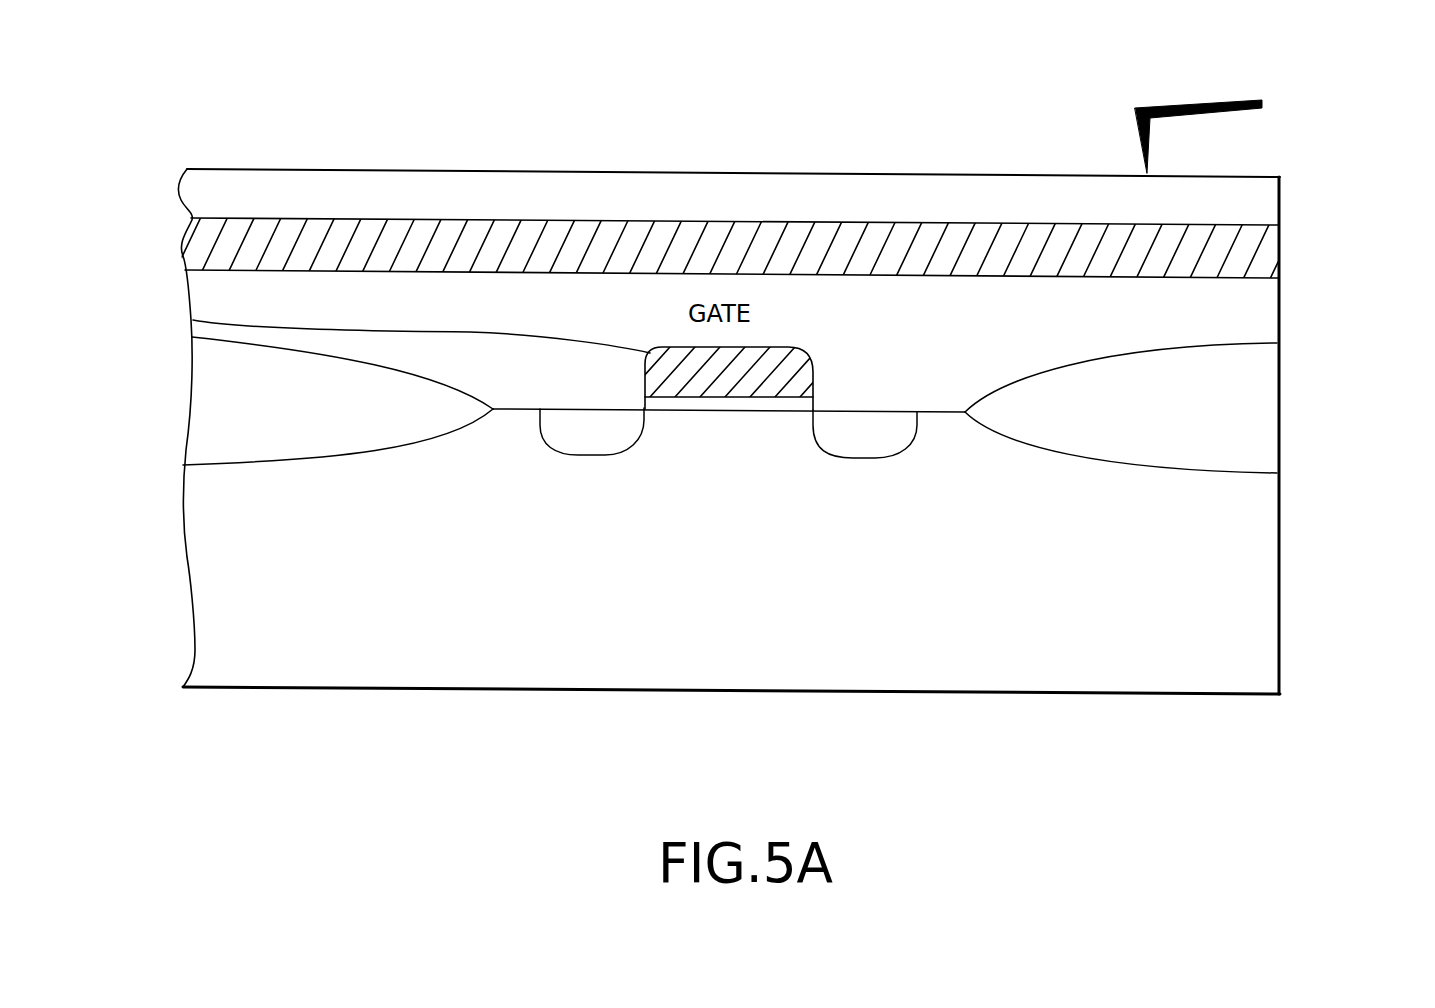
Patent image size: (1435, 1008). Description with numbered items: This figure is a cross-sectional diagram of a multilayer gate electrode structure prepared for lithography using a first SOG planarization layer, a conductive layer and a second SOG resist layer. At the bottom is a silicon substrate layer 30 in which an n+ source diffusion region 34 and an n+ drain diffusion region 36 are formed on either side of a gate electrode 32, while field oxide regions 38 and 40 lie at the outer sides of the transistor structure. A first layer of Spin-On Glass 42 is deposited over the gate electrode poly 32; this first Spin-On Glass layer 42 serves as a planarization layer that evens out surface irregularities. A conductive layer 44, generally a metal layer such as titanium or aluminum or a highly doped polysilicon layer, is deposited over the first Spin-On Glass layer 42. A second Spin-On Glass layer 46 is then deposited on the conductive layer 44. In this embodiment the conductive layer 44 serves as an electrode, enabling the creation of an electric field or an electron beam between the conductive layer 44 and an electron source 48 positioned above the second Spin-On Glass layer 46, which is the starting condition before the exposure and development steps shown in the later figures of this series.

The silicon substrate layer 30 is at (277, 552).
The gate electrode 32 is at (193, 320).
The n+ source diffusion region 34 is at (568, 430).
The n+ drain diffusion region 36 is at (833, 430).
The field oxide region 38 is at (310, 447).
The field oxide region 40 is at (1258, 392).
The first Spin-On Glass layer 42 is at (1263, 303).
The conductive layer 44 is at (1276, 235).
The second Spin-On Glass layer 46 is at (1262, 183).
The electron source 48 is at (1262, 104).